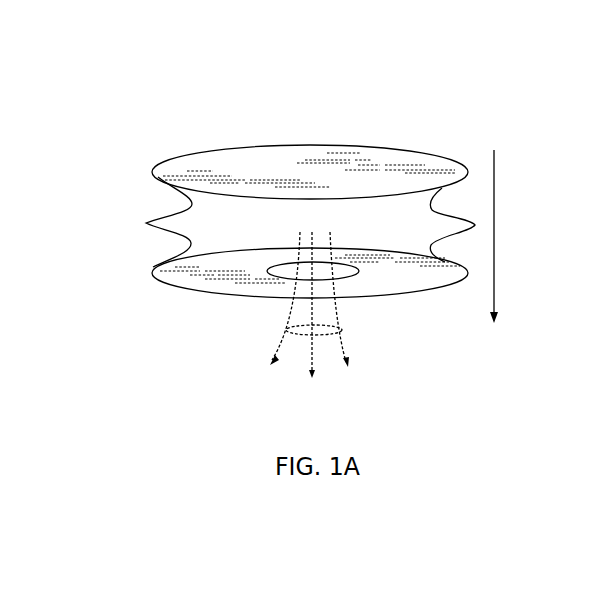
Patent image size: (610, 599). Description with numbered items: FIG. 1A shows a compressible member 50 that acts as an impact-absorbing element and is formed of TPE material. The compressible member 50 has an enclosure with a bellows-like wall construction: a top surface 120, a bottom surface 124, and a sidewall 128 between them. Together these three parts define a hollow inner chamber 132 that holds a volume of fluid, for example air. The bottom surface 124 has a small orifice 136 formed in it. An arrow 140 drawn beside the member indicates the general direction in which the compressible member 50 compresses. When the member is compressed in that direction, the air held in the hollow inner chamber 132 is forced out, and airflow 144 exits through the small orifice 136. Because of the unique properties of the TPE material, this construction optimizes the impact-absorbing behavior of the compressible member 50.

The compressible member 50 is at (242, 78).
The top surface 120 is at (400, 156).
The bottom surface 124 is at (230, 272).
The sidewall 128 is at (146, 222).
The hollow inner chamber 132 is at (400, 231).
The small orifice 136 is at (346, 272).
The arrow 140 is at (496, 226).
The airflow 144 is at (288, 330).